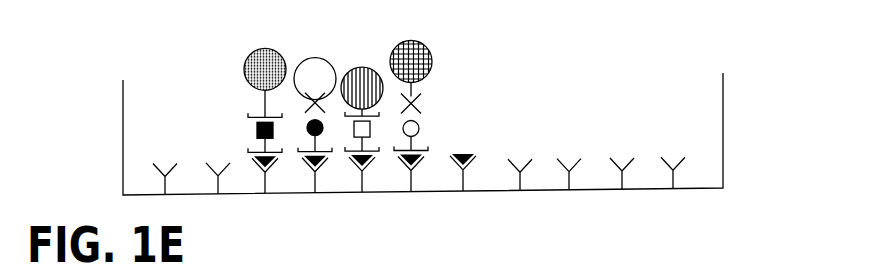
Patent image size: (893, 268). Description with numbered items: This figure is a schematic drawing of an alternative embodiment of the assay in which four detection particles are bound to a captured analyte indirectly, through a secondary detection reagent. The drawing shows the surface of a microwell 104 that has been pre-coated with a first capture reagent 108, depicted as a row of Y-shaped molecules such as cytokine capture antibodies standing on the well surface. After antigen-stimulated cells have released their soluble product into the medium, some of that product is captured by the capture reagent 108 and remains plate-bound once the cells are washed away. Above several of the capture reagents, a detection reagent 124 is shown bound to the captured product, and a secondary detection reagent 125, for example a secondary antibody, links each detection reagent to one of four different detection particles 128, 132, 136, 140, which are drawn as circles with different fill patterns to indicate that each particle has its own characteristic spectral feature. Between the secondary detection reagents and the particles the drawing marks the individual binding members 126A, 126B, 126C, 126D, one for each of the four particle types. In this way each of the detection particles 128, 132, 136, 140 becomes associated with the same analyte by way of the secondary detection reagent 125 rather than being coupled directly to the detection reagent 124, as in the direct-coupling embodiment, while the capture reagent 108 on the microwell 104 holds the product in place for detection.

The microwell 104 is at (723, 128).
The first capture reagent 108 is at (572, 157).
The detection reagent 124 is at (233, 151).
The secondary detection reagent 125 is at (256, 130).
The binding member 126A is at (238, 105).
The binding member 126B is at (324, 108).
The binding member 126C is at (386, 108).
The binding member 126D is at (432, 108).
The detection particle 128 is at (262, 45).
The detection particle 132 is at (310, 58).
The detection particle 136 is at (358, 67).
The detection particle 140 is at (412, 41).